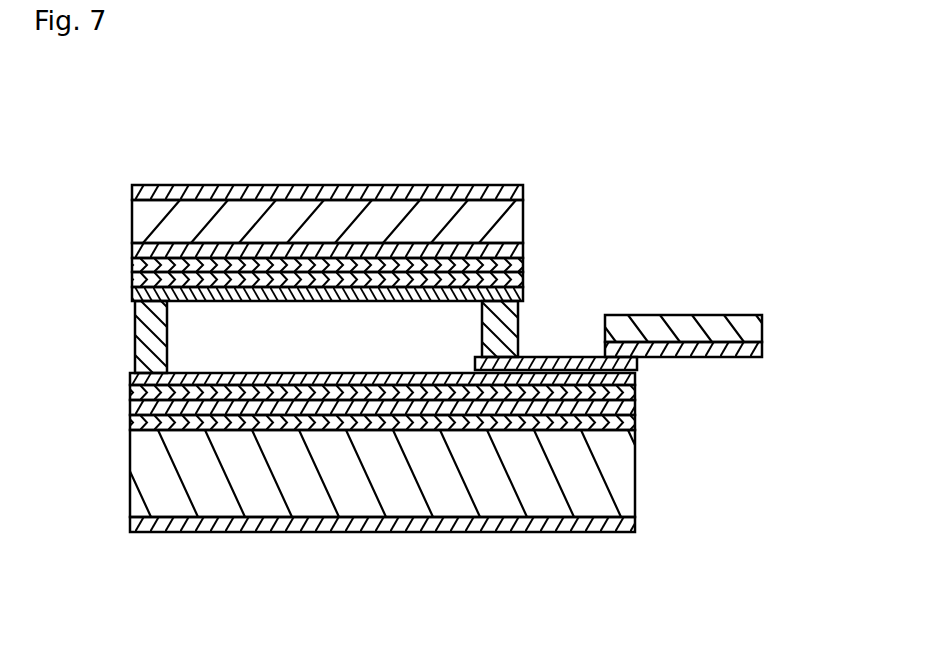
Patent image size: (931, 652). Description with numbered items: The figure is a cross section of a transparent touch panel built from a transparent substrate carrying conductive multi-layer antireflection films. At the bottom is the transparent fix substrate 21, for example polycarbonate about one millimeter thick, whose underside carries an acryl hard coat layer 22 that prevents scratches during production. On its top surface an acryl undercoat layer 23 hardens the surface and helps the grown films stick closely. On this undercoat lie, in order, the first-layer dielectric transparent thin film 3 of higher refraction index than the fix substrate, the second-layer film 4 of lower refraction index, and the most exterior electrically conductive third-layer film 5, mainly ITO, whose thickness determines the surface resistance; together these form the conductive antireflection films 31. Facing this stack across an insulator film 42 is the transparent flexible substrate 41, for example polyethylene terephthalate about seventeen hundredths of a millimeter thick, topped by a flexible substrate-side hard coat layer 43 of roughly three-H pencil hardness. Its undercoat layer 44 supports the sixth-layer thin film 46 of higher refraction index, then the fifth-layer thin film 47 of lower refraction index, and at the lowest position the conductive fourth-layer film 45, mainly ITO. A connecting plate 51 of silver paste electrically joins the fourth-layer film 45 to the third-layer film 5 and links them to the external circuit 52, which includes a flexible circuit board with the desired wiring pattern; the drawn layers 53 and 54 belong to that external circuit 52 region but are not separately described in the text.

The first-layer dielectric transparent thin film 3 is at (635, 410).
The second-layer film 4 is at (635, 395).
The third-layer film 5 is at (635, 383).
The transparent fix substrate 21 is at (635, 498).
The hard coat layer 22 is at (560, 532).
The undercoat layer 23 is at (635, 425).
The conductive antireflection films 31 is at (475, 433).
The transparent flexible substrate 41 is at (130, 245).
The insulator film 42 is at (133, 350).
The transparent flexible substrate-side hard coat layer 43 is at (330, 185).
The undercoat layer 44 is at (130, 250).
The fourth-layer film 45 is at (130, 296).
The sixth-layer thin film 46 is at (130, 265).
The fifth-layer thin film 47 is at (130, 280).
The connecting plate 51 is at (530, 355).
The external circuit 52 is at (731, 323).
The terminal layer 53 is at (705, 315).
The terminal layer 54 is at (705, 366).